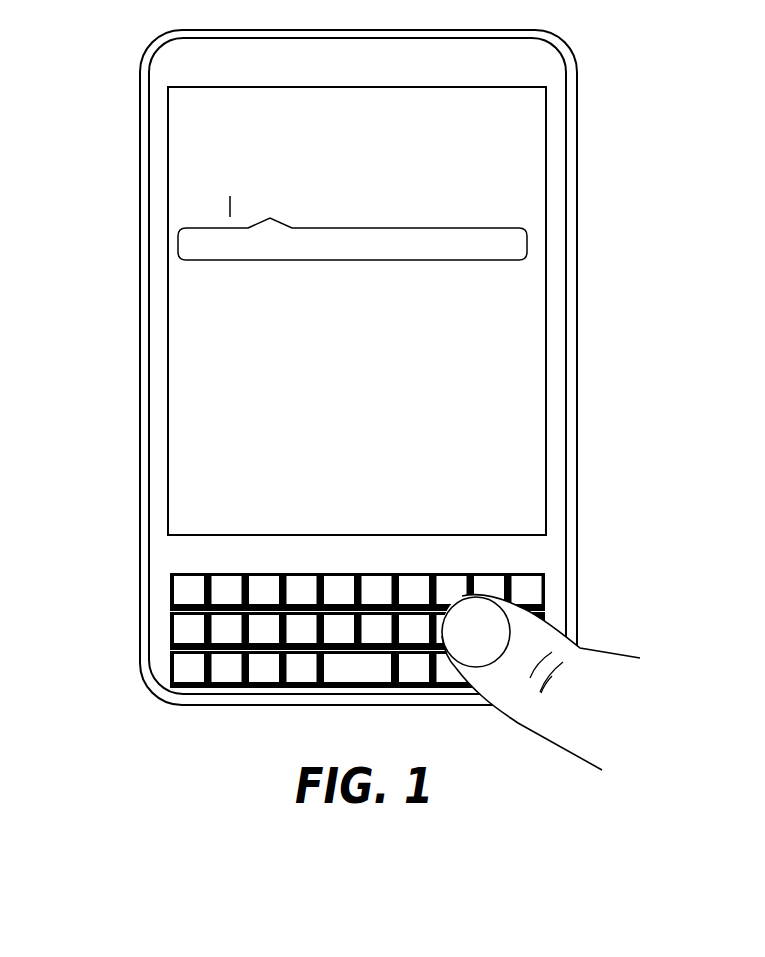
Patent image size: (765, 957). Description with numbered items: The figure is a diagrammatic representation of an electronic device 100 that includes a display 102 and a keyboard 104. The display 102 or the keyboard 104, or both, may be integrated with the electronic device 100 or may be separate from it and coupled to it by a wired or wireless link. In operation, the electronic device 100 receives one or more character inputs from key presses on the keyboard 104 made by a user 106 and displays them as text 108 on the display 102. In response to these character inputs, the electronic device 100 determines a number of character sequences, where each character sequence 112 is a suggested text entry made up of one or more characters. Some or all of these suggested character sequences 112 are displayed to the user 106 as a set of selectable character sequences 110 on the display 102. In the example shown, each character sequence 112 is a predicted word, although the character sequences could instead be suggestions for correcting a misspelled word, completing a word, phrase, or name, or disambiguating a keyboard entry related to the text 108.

The electronic device 100 is at (140, 67).
The display 102 is at (168, 200).
The keyboard 104 is at (170, 630).
The user 106 is at (593, 663).
The text 108 is at (523, 100).
The set of selectable character sequences 110 is at (178, 248).
The character sequence 112 is at (213, 252).